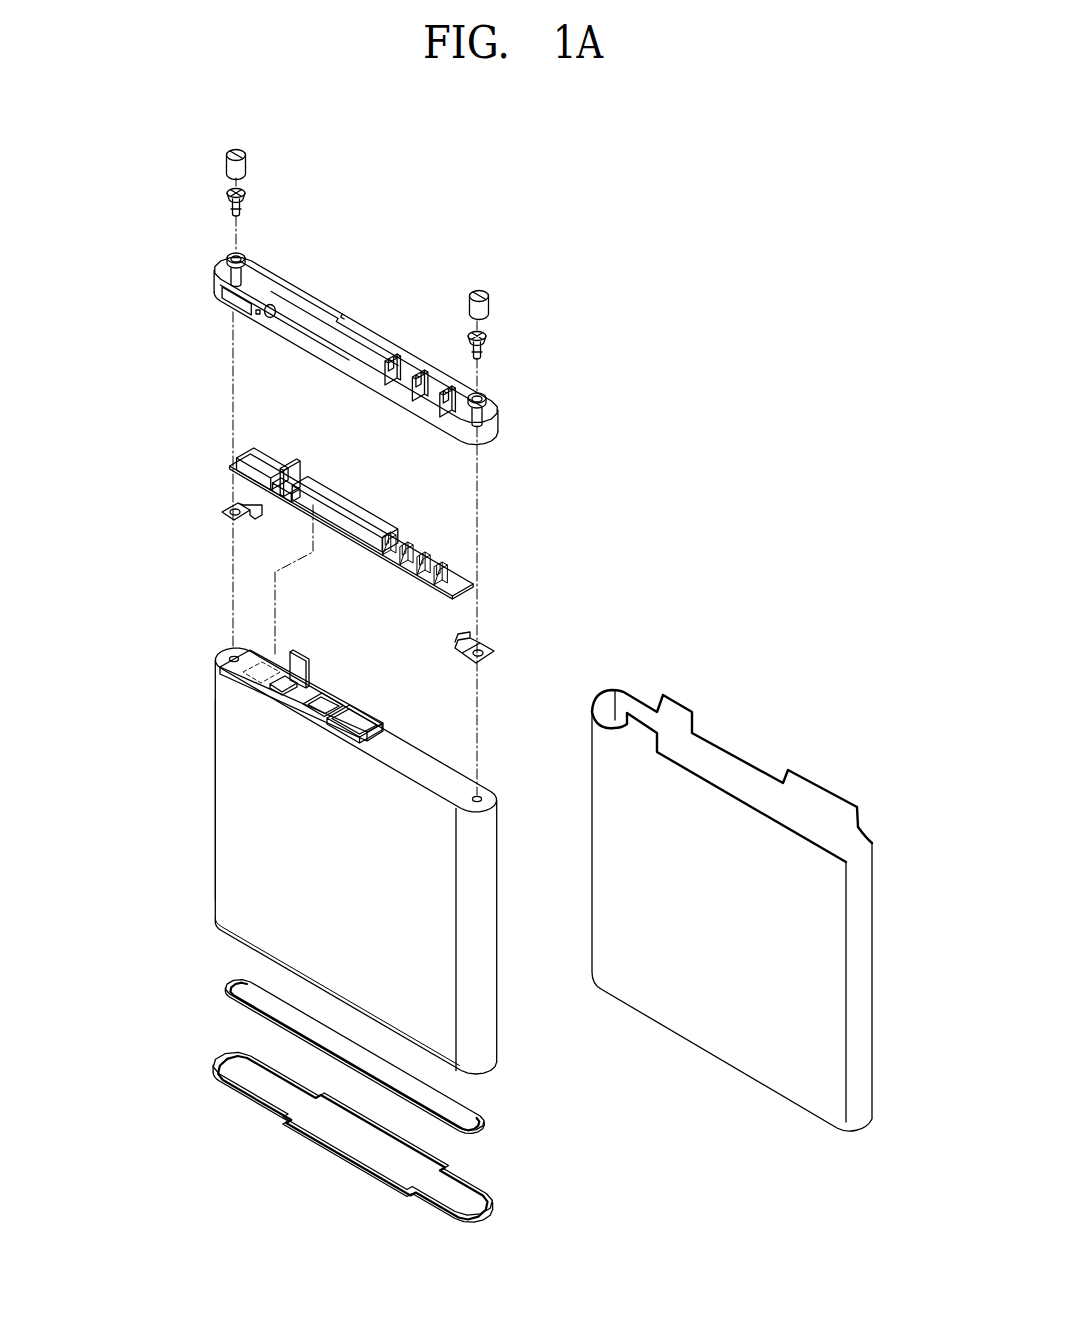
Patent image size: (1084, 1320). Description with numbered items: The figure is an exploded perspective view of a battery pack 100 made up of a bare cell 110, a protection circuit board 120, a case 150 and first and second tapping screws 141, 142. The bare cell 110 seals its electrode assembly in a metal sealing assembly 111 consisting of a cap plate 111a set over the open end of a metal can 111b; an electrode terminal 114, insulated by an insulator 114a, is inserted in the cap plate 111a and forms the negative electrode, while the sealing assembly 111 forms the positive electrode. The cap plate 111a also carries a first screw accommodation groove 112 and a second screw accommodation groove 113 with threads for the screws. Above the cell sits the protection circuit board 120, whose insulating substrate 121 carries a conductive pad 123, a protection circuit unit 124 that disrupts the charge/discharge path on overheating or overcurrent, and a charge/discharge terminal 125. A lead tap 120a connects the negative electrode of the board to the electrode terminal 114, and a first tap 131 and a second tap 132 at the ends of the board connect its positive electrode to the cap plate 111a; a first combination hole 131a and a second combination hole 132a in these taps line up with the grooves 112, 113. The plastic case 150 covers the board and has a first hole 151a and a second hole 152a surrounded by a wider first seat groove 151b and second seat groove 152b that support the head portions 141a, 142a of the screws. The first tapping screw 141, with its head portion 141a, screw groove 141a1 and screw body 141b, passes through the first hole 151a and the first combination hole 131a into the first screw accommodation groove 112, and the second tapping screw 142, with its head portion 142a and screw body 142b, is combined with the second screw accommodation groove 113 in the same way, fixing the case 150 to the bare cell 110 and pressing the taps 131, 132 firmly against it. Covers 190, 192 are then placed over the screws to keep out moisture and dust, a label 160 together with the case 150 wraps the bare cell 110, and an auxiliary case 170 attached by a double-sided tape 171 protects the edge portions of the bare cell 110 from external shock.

The battery pack 100 is at (710, 137).
The bare cell 110 is at (503, 1030).
The sealing assembly 111 is at (135, 795).
The cap plate 111a is at (402, 770).
The metal can 111b is at (225, 808).
The first screw accommodation groove 112 is at (498, 804).
The second screw accommodation groove 113 is at (217, 672).
The electrode terminal 114 is at (351, 744).
The insulator 114a is at (383, 731).
The protection circuit board 120 is at (337, 472).
The lead tap 120a is at (315, 684).
The insulating substrate 121 is at (478, 580).
The conductive pad 123 is at (298, 462).
The protection circuit unit 124 is at (263, 452).
The charge/discharge terminal 125 is at (453, 552).
The first tap 131 is at (451, 645).
The first combination hole 131a is at (484, 656).
The second tap 132 is at (228, 528).
The second combination hole 132a is at (226, 511).
The first tapping screw 141 is at (492, 330).
The head portion 141a is at (487, 336).
The screw groove 141a1 is at (470, 336).
The screw body 141b is at (485, 348).
The second tapping screw 142 is at (226, 185).
The head portion 142a is at (226, 195).
The screw body 142b is at (229, 208).
The case 150 is at (308, 276).
The first hole 151a is at (483, 412).
The first seat groove 151b is at (486, 397).
The second hole 152a is at (232, 272).
The second seat groove 152b is at (227, 258).
The label 160 is at (749, 744).
The auxiliary case 170 is at (208, 1080).
The double-sided tape 171 is at (243, 993).
The cover 190 is at (233, 145).
The cover 192 is at (488, 290).